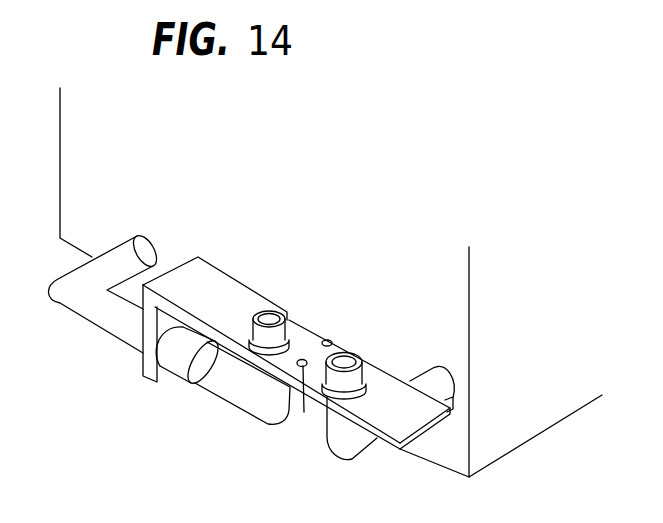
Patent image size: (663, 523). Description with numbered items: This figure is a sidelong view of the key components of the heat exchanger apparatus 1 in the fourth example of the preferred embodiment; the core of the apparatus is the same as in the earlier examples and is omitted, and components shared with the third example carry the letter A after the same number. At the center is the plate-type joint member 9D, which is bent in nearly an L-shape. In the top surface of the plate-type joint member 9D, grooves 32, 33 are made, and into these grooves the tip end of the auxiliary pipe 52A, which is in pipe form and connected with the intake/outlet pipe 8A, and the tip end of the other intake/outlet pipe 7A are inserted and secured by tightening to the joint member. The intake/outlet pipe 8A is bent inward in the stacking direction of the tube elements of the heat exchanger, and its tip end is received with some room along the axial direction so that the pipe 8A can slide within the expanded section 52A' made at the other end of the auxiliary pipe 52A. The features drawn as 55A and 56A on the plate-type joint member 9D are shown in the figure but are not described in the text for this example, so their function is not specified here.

The heat exchanger apparatus 1 is at (538, 415).
The plate-type joint member 9D is at (205, 276).
The groove 33 is at (300, 317).
The hole 55A is at (331, 341).
The pin 56A is at (304, 412).
The groove 32 is at (380, 367).
The intake/outlet pipe 8A is at (127, 328).
The expanded section 52A' is at (150, 389).
The auxiliary pipe 52A is at (224, 407).
The intake/outlet pipe 7A is at (350, 445).